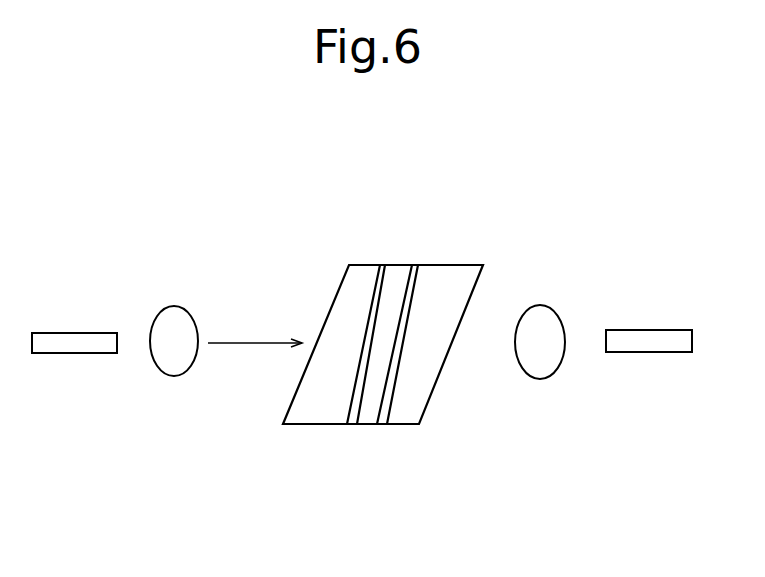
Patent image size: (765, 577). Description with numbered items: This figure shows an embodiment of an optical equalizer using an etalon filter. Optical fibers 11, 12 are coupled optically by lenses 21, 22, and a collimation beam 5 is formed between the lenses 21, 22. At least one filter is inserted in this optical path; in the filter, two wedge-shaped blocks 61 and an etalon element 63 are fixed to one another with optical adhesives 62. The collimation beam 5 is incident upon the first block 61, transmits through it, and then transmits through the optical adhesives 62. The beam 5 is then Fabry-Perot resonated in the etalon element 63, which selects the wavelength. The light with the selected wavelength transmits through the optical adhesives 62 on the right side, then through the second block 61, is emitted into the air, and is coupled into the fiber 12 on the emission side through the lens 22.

The collimation beam 5 is at (257, 337).
The optical fiber 11 is at (60, 343).
The optical fiber 12 is at (630, 343).
The lens 21 is at (175, 365).
The lens 22 is at (537, 320).
The wedge-shaped block 61 is at (349, 292).
The optical adhesives 62 is at (380, 267).
The etalon element 63 is at (370, 422).